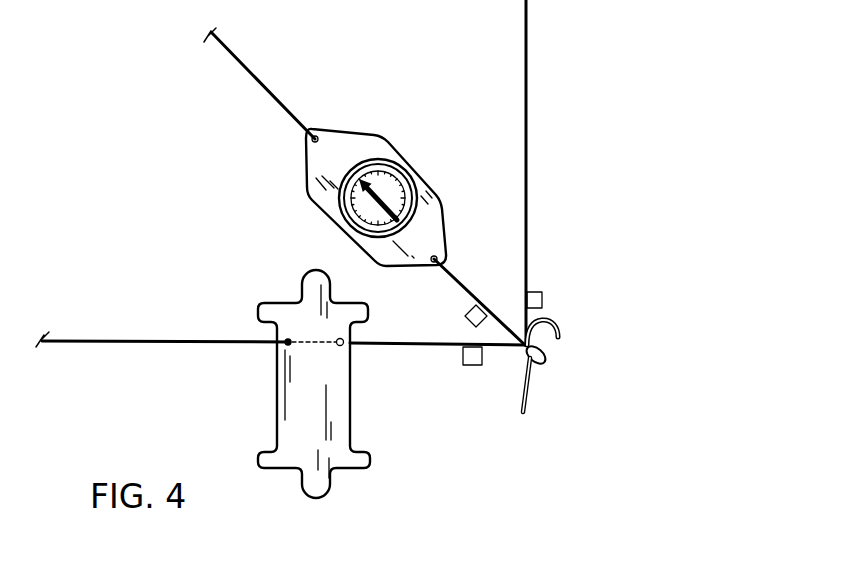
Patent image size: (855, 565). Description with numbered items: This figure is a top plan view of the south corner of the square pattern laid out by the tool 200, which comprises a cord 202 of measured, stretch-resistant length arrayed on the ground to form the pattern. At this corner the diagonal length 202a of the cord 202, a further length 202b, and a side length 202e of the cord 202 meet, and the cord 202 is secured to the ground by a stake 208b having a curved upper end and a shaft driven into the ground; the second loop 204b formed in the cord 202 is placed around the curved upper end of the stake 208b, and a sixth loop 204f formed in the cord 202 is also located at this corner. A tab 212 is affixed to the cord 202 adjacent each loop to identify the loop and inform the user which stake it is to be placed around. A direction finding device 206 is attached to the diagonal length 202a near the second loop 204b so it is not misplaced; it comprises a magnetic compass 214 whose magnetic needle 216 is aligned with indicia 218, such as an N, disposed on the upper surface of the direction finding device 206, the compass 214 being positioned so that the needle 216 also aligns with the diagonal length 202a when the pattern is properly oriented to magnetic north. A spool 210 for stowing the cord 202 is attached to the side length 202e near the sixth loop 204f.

The tool 200 is at (580, 60).
The cord 202 is at (529, 119).
The diagonal length 202a is at (248, 70).
The string segment 202b is at (528, 212).
The side length 202e is at (153, 343).
The second loop 204b is at (548, 360).
The sixth loop 204f is at (521, 356).
The direction finding device 206 is at (369, 138).
The stake 208b is at (560, 331).
The spool 210 is at (332, 427).
The tab 212 is at (537, 295).
The magnetic compass 214 is at (387, 165).
The magnetic needle 216 is at (415, 190).
The indicia 218 is at (337, 170).